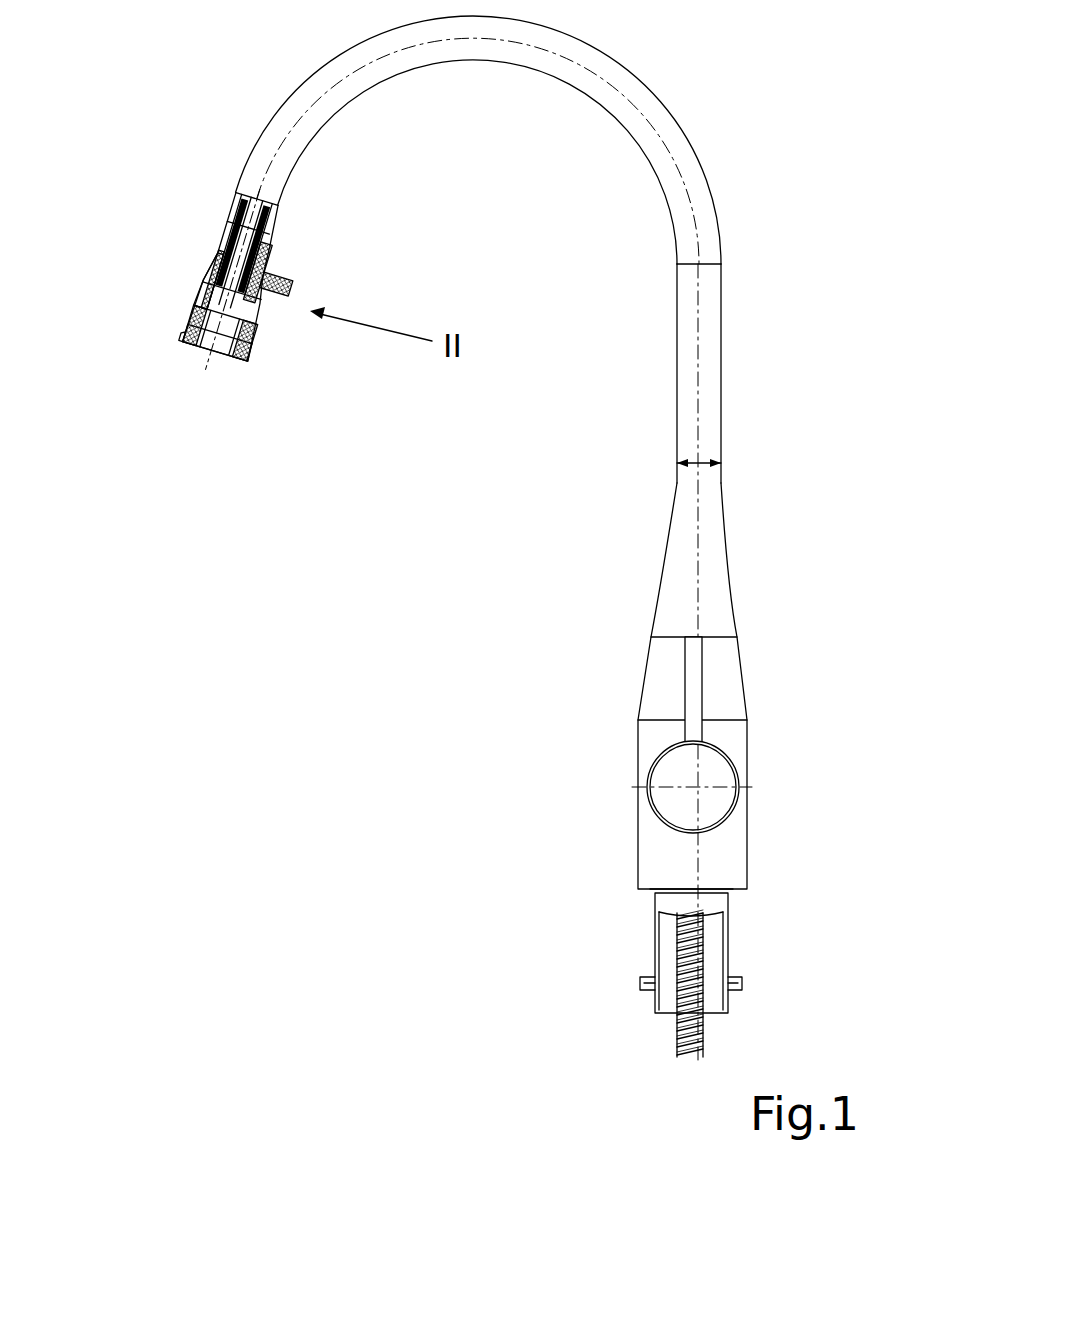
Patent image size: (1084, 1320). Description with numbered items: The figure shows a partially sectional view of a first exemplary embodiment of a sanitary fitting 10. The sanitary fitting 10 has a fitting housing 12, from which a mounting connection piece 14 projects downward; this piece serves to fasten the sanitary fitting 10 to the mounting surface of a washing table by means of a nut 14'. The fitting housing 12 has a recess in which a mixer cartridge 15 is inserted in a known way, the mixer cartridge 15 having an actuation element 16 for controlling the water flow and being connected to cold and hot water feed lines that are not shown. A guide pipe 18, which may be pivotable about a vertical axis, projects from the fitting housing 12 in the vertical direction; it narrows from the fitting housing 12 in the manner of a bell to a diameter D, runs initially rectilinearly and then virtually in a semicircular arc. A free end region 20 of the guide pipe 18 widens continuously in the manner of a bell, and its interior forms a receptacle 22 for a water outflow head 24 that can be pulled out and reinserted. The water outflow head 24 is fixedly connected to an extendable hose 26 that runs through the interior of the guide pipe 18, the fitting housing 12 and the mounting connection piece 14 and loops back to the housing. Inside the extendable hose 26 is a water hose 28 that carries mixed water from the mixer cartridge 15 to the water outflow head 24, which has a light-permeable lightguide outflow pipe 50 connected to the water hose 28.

The sanitary fitting 10 is at (418, 564).
The fitting housing 12 is at (648, 818).
The mounting connection piece 14 is at (761, 951).
The nut 14' is at (763, 981).
The mixer cartridge 15 is at (738, 751).
The actuation element 16 is at (697, 680).
The guide pipe 18 is at (710, 337).
The free end region 20 is at (195, 234).
The receptacle 22 is at (208, 285).
The water outflow head 24 is at (234, 372).
The extendable hose 26 is at (712, 1032).
The water hose 28 is at (270, 228).
The lightguide outflow pipe 50 is at (200, 352).
The diameter D is at (705, 455).